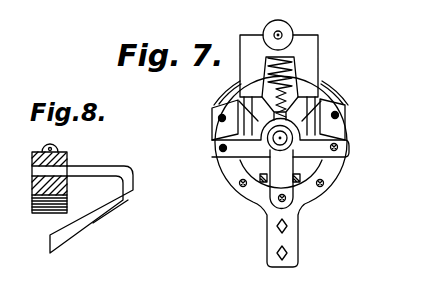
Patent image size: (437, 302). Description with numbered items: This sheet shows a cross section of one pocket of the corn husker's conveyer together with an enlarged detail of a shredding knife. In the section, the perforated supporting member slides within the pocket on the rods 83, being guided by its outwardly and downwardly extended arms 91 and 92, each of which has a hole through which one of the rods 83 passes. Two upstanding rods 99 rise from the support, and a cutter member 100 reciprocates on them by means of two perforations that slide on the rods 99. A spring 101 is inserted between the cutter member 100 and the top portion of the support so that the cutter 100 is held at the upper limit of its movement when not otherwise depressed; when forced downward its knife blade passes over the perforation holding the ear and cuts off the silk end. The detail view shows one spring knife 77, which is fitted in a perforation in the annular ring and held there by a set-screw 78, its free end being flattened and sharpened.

In FIG. 7, the cutter member 100 is at (304, 42).
In FIG. 7, the spring 101 is at (288, 68).
In FIG. 7, the upstanding rods 99 is at (226, 102).
In FIG. 7, the arm 91 is at (236, 137).
In FIG. 7, the arm 92 is at (288, 161).
In FIG. 7, the rods 83 is at (218, 156).
In FIG. 8, the set-screw 78 is at (56, 148).
In FIG. 8, the spring knife 77 is at (94, 172).